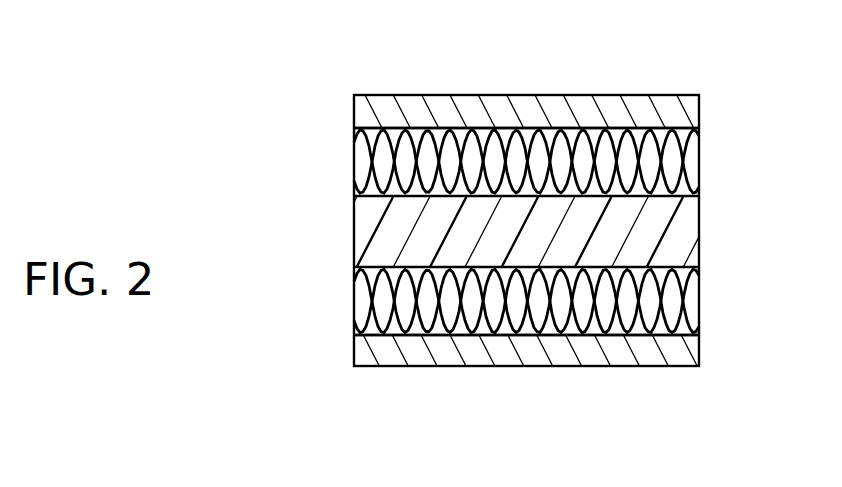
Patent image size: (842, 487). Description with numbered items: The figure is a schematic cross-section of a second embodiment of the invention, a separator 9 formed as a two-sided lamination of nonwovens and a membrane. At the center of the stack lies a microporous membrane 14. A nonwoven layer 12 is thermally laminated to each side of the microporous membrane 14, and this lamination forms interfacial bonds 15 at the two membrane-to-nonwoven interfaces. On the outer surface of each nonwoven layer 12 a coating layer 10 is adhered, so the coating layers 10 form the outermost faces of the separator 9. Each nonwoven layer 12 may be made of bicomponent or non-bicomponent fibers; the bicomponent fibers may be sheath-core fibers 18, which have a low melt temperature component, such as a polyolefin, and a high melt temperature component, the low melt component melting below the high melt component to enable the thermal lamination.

The separator 9 is at (310, 194).
The coating layer 10 is at (699, 111).
The nonwoven layer 12 is at (699, 158).
The microporous membrane 14 is at (699, 243).
The interfacial bond 15 is at (699, 195).
The sheath-core fiber 18 is at (447, 128).